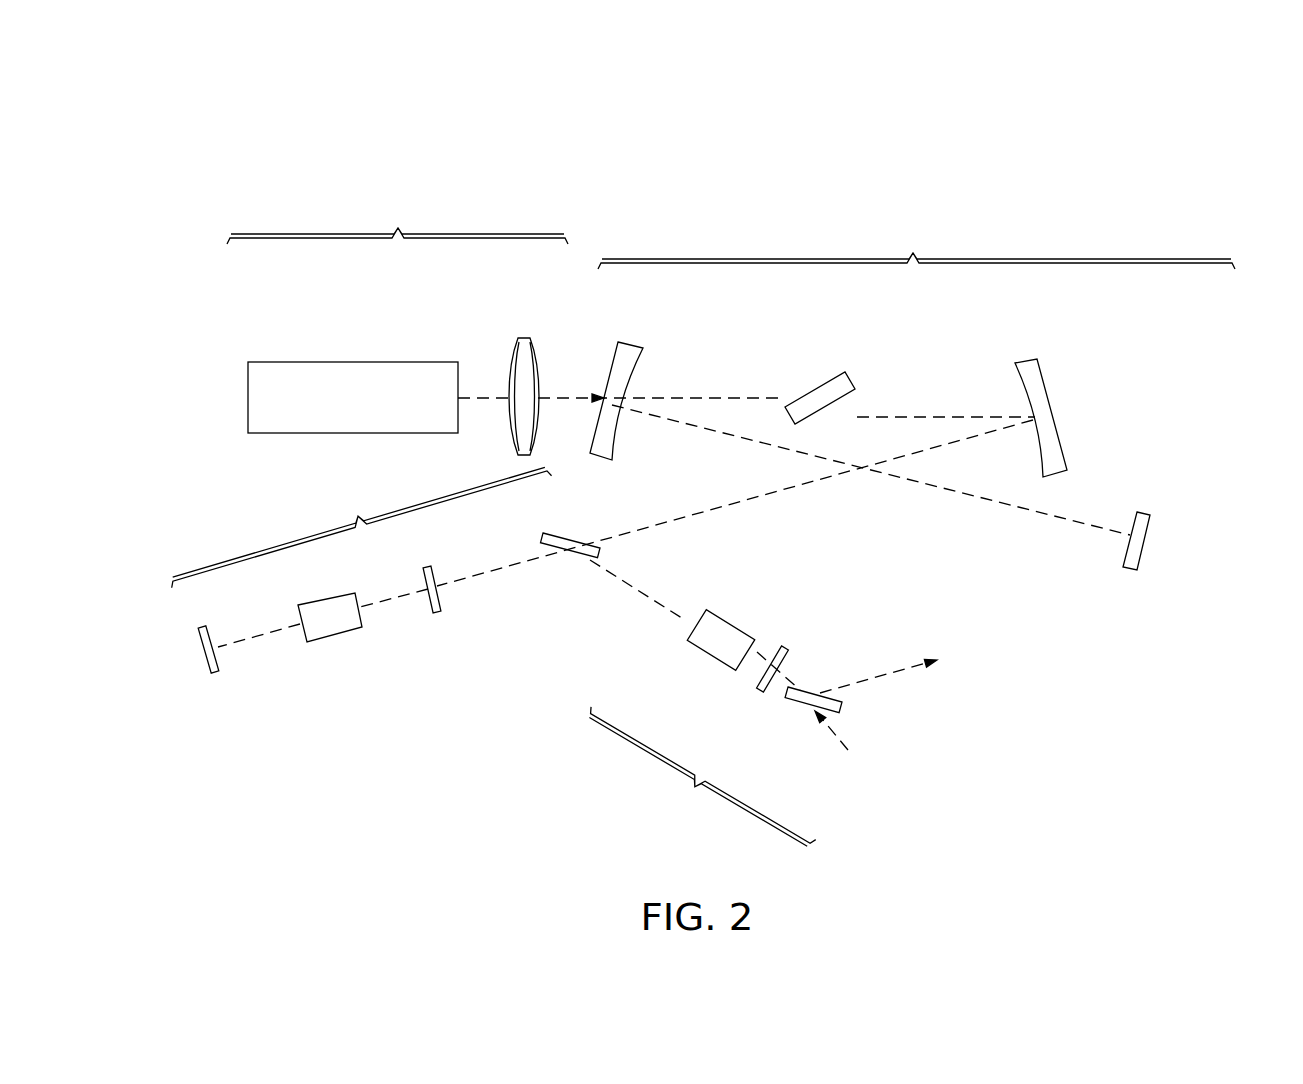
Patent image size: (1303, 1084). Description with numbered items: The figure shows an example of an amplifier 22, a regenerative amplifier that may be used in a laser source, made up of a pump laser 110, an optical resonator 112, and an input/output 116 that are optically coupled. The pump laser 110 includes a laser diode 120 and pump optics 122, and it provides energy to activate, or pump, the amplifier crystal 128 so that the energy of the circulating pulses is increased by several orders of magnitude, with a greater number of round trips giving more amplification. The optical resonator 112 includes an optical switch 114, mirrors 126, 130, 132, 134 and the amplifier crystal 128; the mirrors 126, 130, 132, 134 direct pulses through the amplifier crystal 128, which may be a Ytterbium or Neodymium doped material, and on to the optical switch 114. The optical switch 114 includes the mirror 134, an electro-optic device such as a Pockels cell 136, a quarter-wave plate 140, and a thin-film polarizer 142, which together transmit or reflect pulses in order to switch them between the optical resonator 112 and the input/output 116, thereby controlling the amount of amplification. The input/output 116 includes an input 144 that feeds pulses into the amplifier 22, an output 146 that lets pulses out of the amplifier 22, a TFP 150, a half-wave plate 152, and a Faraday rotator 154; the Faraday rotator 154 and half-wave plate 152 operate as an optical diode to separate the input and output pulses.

The amplifier 22 is at (522, 146).
The pump laser 110 is at (397, 207).
The optical resonator 112 is at (916, 232).
The optical switch 114 is at (359, 522).
The input/output 116 is at (699, 791).
The laser diode 120 is at (353, 362).
The pump optics 122 is at (520, 338).
The mirror 126 is at (632, 343).
The amplifier crystal 128 is at (850, 380).
The mirror 130 is at (1047, 393).
The mirror 132 is at (1145, 512).
The mirror 134 is at (215, 672).
The Pockels cell 136 is at (335, 635).
The quarter-wave plate 140 is at (438, 613).
The thin-film polarizer 142 is at (543, 538).
The input 144 is at (835, 732).
The output 146 is at (880, 673).
The TFP 150 is at (843, 708).
The half-wave plate 152 is at (760, 690).
The Faraday rotator 154 is at (730, 623).